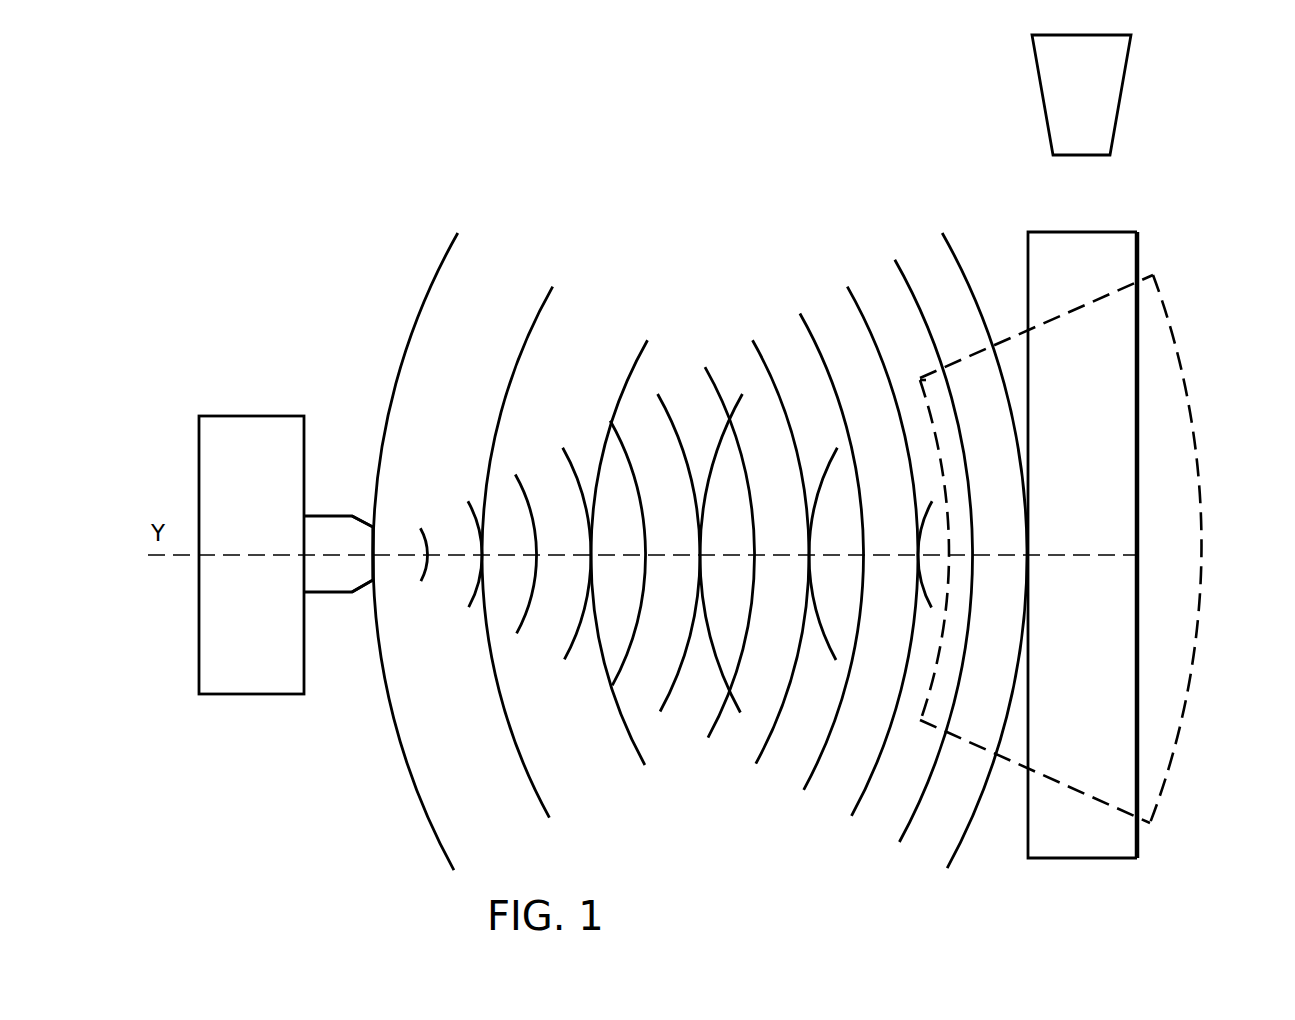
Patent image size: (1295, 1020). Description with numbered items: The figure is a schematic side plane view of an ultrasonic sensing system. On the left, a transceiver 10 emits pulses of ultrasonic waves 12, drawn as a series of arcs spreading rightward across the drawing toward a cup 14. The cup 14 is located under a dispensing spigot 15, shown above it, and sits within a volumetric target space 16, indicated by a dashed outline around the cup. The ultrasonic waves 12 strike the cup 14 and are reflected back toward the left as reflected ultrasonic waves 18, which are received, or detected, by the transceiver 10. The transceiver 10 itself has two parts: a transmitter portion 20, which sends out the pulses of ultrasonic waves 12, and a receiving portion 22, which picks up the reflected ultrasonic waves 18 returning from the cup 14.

The transceiver 10 is at (348, 565).
The ultrasonic waves 12 is at (807, 768).
The cup 14 is at (1095, 614).
The dispensing spigot 15 is at (1125, 73).
The volumetric target space 16 is at (1182, 372).
The reflected ultrasonic waves 18 is at (457, 247).
The transmitter portion 20 is at (375, 553).
The receiving portion 22 is at (375, 568).